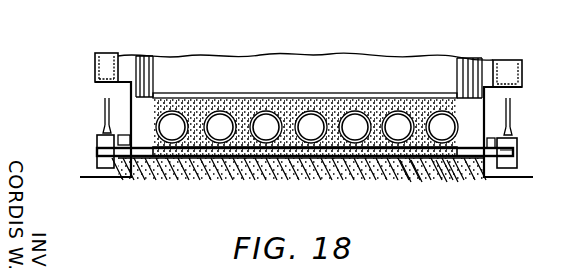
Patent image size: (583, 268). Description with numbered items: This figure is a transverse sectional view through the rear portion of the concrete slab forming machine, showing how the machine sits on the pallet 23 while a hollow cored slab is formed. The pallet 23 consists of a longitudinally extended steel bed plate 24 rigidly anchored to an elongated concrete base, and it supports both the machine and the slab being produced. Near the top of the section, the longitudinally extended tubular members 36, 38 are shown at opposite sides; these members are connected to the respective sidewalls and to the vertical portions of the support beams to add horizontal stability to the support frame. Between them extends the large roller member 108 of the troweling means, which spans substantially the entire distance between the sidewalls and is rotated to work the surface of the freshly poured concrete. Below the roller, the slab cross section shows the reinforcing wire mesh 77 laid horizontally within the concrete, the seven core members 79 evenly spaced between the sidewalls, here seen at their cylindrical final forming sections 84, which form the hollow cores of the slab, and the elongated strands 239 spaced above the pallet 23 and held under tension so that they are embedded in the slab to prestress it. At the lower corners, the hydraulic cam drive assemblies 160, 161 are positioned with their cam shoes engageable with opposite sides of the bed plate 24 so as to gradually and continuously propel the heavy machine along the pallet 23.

The roller member 108 is at (238, 72).
The tubular member 38 is at (95, 74).
The tubular member 36 is at (522, 68).
The reinforcing wire mesh 77 is at (178, 95).
The core members 79 is at (303, 95).
The strands 239 is at (237, 160).
The final forming sections 84 is at (178, 175).
The pallet 23 is at (418, 165).
The bed plate 24 is at (443, 165).
The hydraulic cam drive assembly 161 is at (97, 152).
The hydraulic cam drive assembly 160 is at (517, 136).